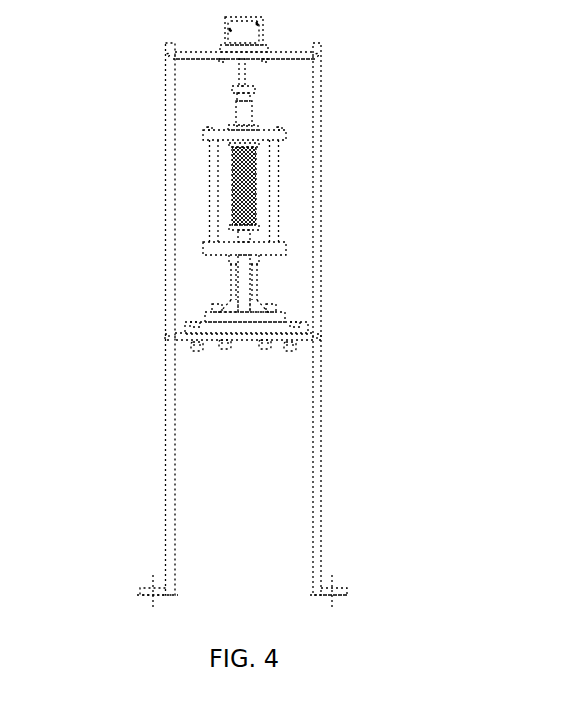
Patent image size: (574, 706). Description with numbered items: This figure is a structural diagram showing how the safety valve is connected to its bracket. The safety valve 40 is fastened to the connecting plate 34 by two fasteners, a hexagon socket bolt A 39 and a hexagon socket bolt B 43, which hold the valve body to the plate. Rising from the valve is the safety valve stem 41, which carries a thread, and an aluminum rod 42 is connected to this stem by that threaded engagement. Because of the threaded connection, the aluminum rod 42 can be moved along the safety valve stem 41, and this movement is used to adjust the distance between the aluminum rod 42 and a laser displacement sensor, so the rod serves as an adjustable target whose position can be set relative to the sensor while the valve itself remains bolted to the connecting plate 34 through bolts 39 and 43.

The connecting plate 34 is at (258, 334).
The hexagon socket bolt A 39 is at (220, 347).
The safety valve 40 is at (235, 290).
The safety valve stem 41 is at (237, 83).
The aluminum rod 42 is at (247, 73).
The hexagon socket bolt B 43 is at (270, 349).